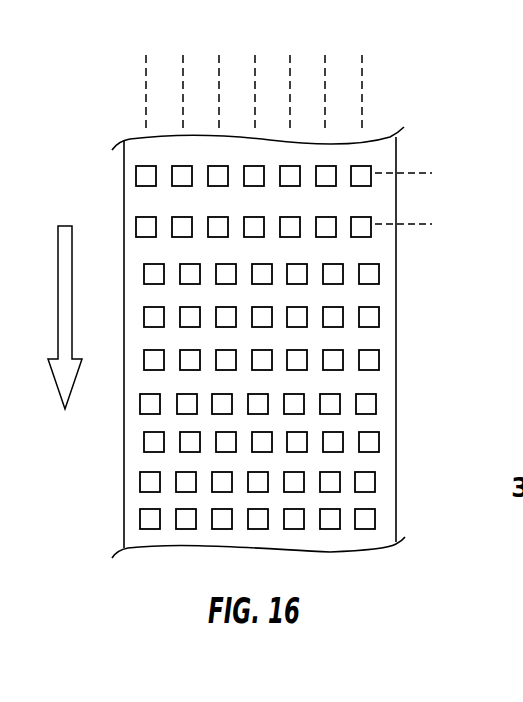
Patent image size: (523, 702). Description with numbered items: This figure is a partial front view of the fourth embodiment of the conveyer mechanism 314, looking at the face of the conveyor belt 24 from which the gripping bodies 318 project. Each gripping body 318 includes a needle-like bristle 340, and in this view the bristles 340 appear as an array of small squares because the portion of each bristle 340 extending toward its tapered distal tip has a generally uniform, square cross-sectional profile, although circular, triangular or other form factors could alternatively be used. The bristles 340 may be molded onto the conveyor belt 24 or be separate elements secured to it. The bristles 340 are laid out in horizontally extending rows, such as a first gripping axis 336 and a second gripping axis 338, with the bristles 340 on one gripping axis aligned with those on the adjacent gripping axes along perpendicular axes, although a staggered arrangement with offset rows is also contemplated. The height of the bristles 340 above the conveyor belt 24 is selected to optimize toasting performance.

The conveyer mechanism 314 is at (146, 90).
The first gripping axis 336 is at (408, 175).
The second gripping axis 338 is at (413, 225).
The gripping body 318 is at (229, 407).
The bristle 340 is at (185, 519).
The conveyor belt 24 is at (357, 531).